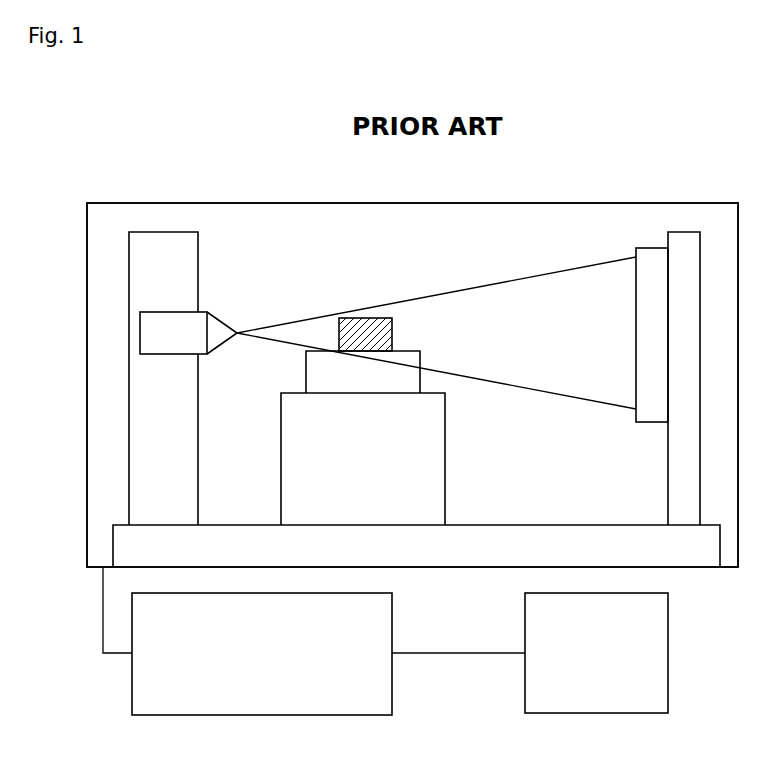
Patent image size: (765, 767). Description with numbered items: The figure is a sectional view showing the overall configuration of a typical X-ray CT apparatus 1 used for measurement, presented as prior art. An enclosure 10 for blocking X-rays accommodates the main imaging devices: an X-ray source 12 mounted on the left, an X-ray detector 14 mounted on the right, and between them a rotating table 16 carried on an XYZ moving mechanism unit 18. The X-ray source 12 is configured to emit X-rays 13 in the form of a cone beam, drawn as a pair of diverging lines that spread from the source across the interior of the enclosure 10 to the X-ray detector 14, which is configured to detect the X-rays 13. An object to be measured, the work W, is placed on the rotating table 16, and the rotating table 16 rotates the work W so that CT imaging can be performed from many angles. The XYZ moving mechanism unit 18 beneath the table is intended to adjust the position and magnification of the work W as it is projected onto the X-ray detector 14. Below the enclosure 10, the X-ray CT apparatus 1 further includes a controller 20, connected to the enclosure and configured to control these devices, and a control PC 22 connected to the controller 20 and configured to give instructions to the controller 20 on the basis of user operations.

The X-ray CT apparatus 1 is at (673, 175).
The enclosure 10 is at (93, 203).
The X-ray source 12 is at (153, 354).
The X-rays 13 is at (541, 274).
The X-ray detector 14 is at (649, 301).
The rotating table 16 is at (420, 382).
The XYZ moving mechanism unit 18 is at (445, 473).
The controller 20 is at (325, 593).
The control PC 22 is at (620, 593).
The work W is at (392, 331).